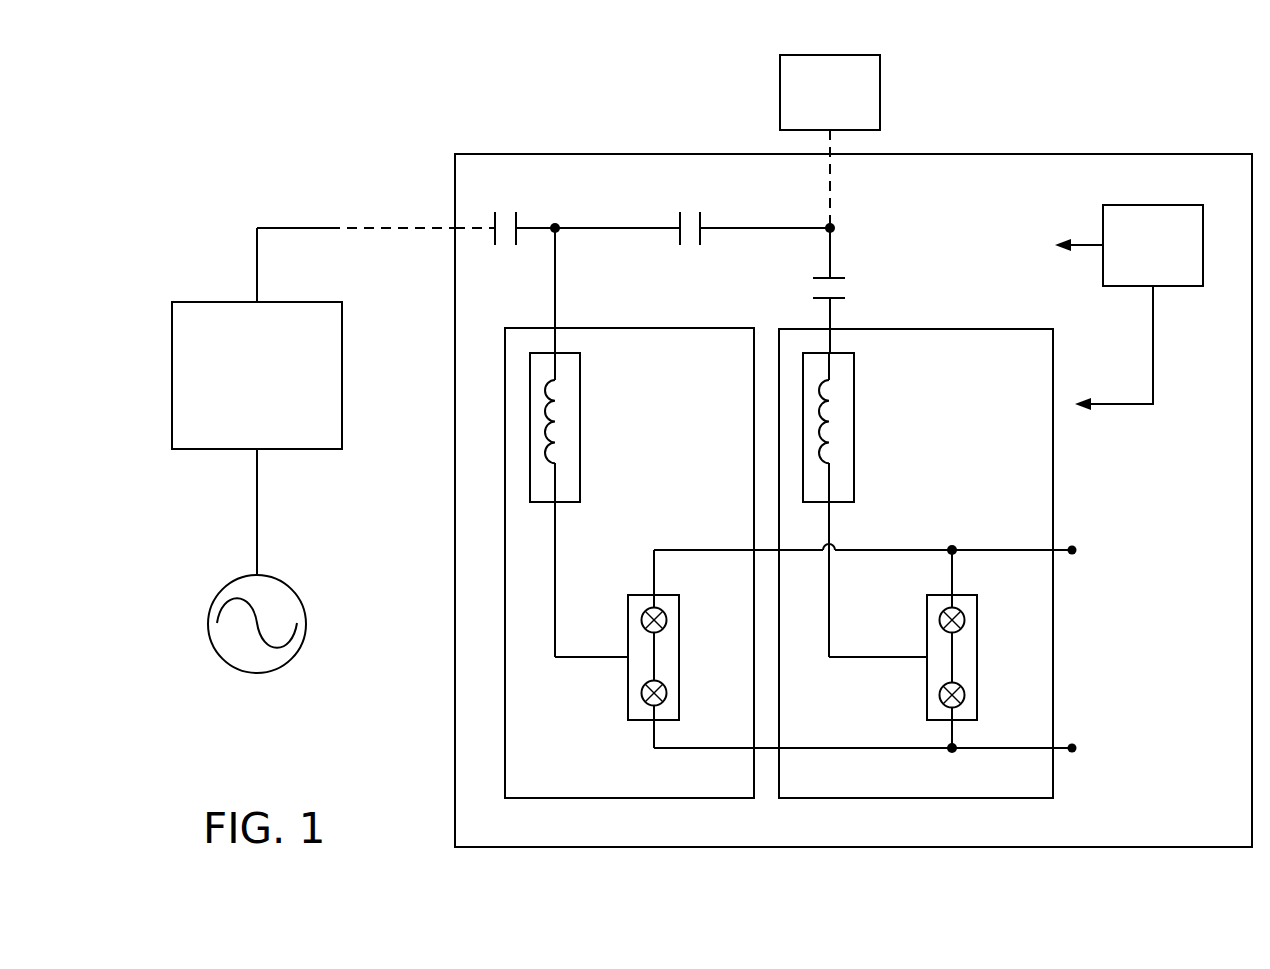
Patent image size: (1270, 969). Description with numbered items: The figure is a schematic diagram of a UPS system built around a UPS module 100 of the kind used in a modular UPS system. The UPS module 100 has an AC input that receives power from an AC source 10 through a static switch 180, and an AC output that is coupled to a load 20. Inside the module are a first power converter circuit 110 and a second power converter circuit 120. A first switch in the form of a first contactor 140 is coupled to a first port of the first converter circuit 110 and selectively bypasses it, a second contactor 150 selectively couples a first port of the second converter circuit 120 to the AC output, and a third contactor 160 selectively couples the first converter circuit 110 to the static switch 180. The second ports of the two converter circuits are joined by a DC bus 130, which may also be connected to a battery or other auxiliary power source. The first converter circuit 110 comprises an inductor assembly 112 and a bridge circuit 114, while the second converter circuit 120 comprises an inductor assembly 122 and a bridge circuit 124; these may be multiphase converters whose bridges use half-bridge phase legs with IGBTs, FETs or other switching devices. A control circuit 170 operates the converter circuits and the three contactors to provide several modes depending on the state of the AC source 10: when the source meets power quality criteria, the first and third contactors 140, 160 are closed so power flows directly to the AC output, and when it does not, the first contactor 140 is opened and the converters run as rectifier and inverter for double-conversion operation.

The AC source 10 is at (257, 673).
The load 20 is at (880, 92).
The UPS module 100 is at (852, 847).
The first power converter circuit 110 is at (628, 328).
The inductor assembly 112 is at (580, 427).
The bridge circuit 114 is at (679, 657).
The second power converter circuit 120 is at (915, 329).
The inductor assembly 122 is at (854, 428).
The bridge circuit 124 is at (977, 657).
The DC bus 130 is at (1148, 617).
The first contactor 140 is at (690, 194).
The second contactor 150 is at (876, 288).
The third contactor 160 is at (505, 198).
The control circuit 170 is at (1153, 205).
The static switch 180 is at (342, 376).